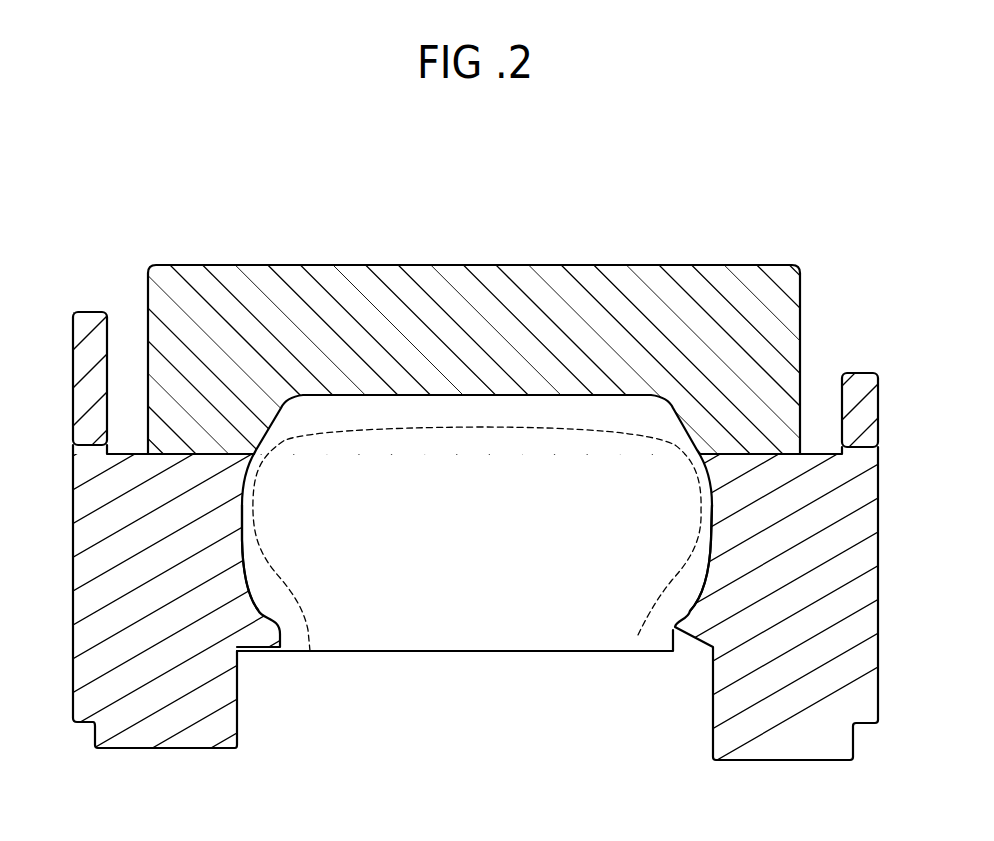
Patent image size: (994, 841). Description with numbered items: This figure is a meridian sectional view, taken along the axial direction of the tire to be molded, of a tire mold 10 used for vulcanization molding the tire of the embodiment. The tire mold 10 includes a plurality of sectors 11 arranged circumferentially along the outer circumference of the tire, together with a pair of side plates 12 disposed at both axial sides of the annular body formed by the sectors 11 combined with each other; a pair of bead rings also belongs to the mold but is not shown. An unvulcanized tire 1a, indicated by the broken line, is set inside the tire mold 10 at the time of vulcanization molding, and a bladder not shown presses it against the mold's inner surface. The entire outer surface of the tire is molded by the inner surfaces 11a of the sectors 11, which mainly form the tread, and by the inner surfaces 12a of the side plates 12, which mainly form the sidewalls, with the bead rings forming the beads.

The tire mold 10 is at (284, 172).
The sector 11 is at (681, 272).
The inner surface of the sector 11a is at (473, 383).
The side plate 12 is at (78, 527).
The inner surface of the side plate 12a is at (242, 543).
The unvulcanized tire 1a is at (637, 637).